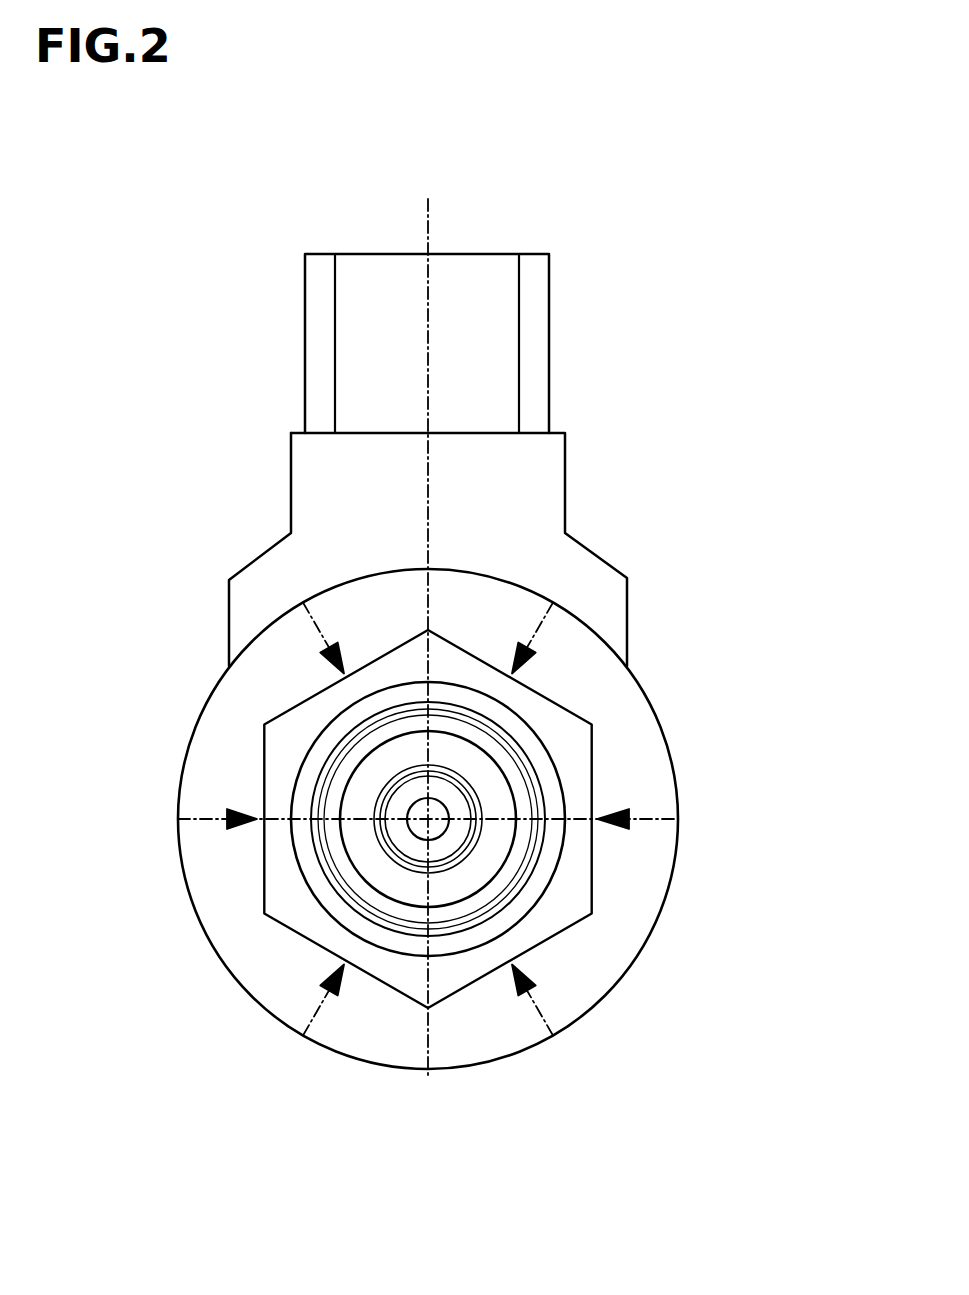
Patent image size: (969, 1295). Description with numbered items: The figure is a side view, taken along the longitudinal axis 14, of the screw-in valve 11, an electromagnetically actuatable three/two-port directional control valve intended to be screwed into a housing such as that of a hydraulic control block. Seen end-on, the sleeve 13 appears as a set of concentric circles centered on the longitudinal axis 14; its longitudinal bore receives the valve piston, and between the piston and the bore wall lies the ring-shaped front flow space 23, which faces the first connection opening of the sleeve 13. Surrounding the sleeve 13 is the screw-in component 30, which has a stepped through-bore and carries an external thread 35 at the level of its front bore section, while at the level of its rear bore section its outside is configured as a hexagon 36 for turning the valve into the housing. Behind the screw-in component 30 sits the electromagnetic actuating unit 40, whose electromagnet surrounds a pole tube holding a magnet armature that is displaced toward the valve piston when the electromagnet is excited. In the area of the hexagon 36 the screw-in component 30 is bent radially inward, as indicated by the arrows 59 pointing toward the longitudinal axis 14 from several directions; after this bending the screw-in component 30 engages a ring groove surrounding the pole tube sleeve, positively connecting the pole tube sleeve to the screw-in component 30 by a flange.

The screw-in valve 11 is at (430, 697).
The electromagnetic actuating unit 40 is at (596, 547).
The screw-in component 30 is at (596, 867).
The hexagon 36 is at (595, 745).
The external thread 35 is at (317, 777).
The sleeve 13 is at (368, 867).
The front flow space 23 is at (457, 883).
The longitudinal axis 14 is at (432, 817).
The arrows 59 is at (307, 626).